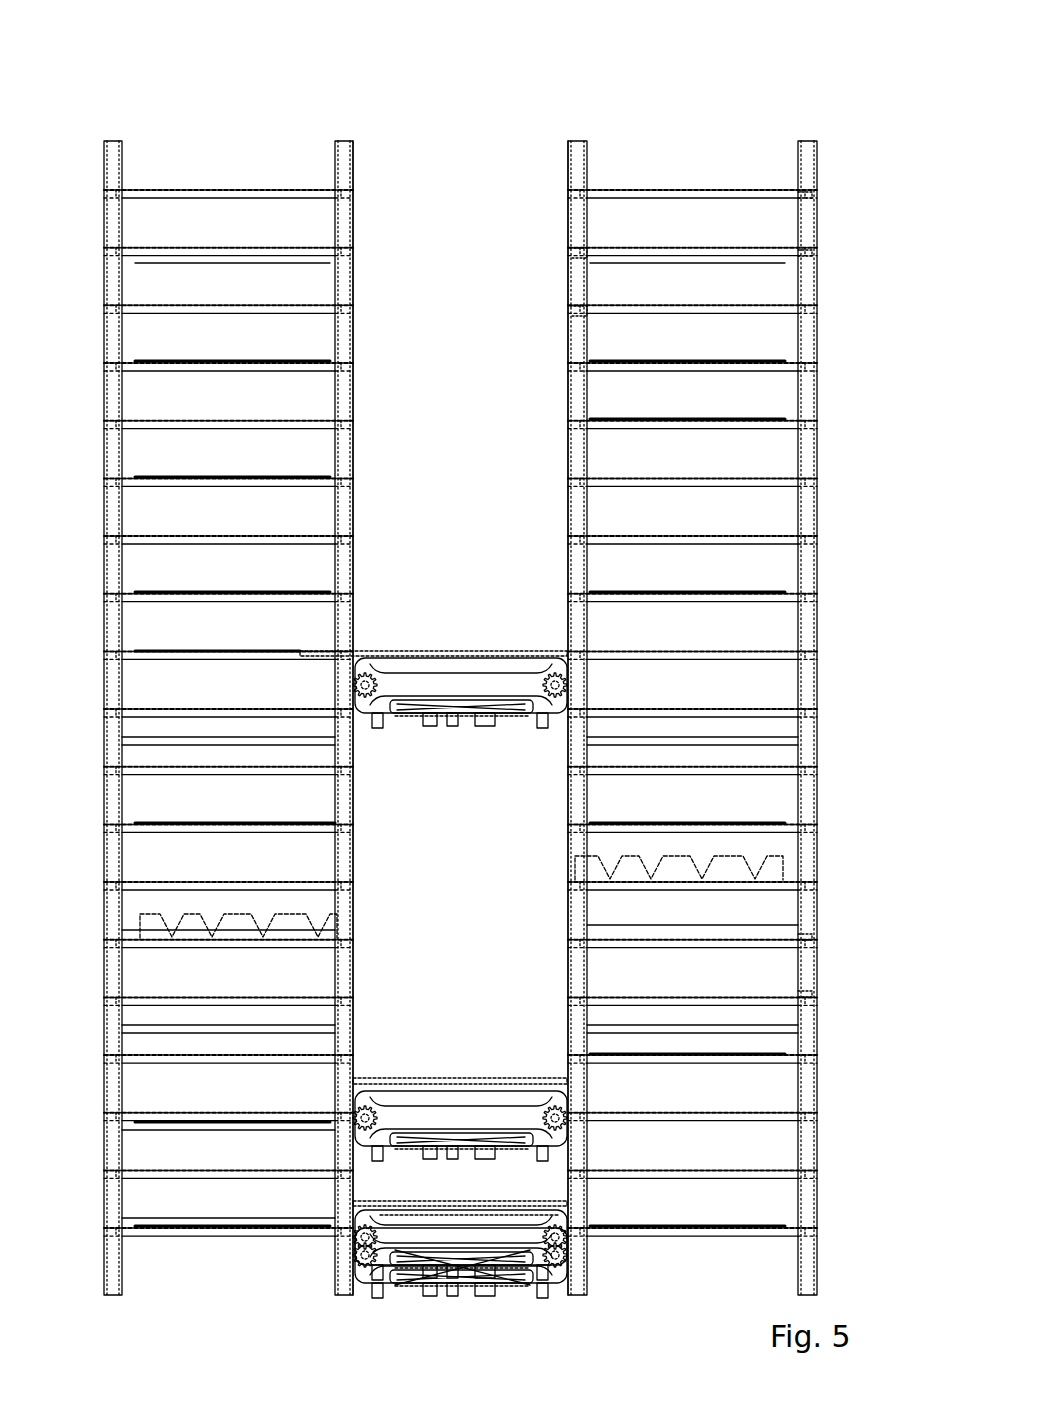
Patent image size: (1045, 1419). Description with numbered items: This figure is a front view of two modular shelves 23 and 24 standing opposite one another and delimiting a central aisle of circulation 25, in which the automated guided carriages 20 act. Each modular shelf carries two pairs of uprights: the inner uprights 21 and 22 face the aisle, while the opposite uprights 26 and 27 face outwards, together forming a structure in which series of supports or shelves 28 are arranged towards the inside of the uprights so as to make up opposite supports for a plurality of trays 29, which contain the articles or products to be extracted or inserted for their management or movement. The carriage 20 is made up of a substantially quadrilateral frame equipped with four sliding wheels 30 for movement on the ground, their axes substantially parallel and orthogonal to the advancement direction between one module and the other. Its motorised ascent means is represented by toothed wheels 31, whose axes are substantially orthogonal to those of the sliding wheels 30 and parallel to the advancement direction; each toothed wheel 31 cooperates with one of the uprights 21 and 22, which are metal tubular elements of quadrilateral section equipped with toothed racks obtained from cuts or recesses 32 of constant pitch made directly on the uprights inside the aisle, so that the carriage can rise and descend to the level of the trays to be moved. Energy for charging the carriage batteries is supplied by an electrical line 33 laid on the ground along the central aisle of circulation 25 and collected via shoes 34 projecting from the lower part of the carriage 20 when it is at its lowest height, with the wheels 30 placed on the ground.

The automated guided carriage 20 is at (467, 665).
The uprights 21 is at (345, 170).
The uprights 22 is at (580, 165).
The modular shelf 23 is at (176, 123).
The modular shelf 24 is at (745, 145).
The central aisle of circulation 25 is at (479, 214).
The uprights 26 is at (112, 565).
The uprights 27 is at (808, 677).
The supports or shelves 28 is at (810, 250).
The trays 29 is at (580, 310).
The sliding wheels 30 is at (378, 727).
The toothed wheels 31 is at (555, 680).
The cuts or recesses 32 is at (353, 400).
The electrical line 33 is at (450, 1295).
The shoes 34 is at (455, 1290).